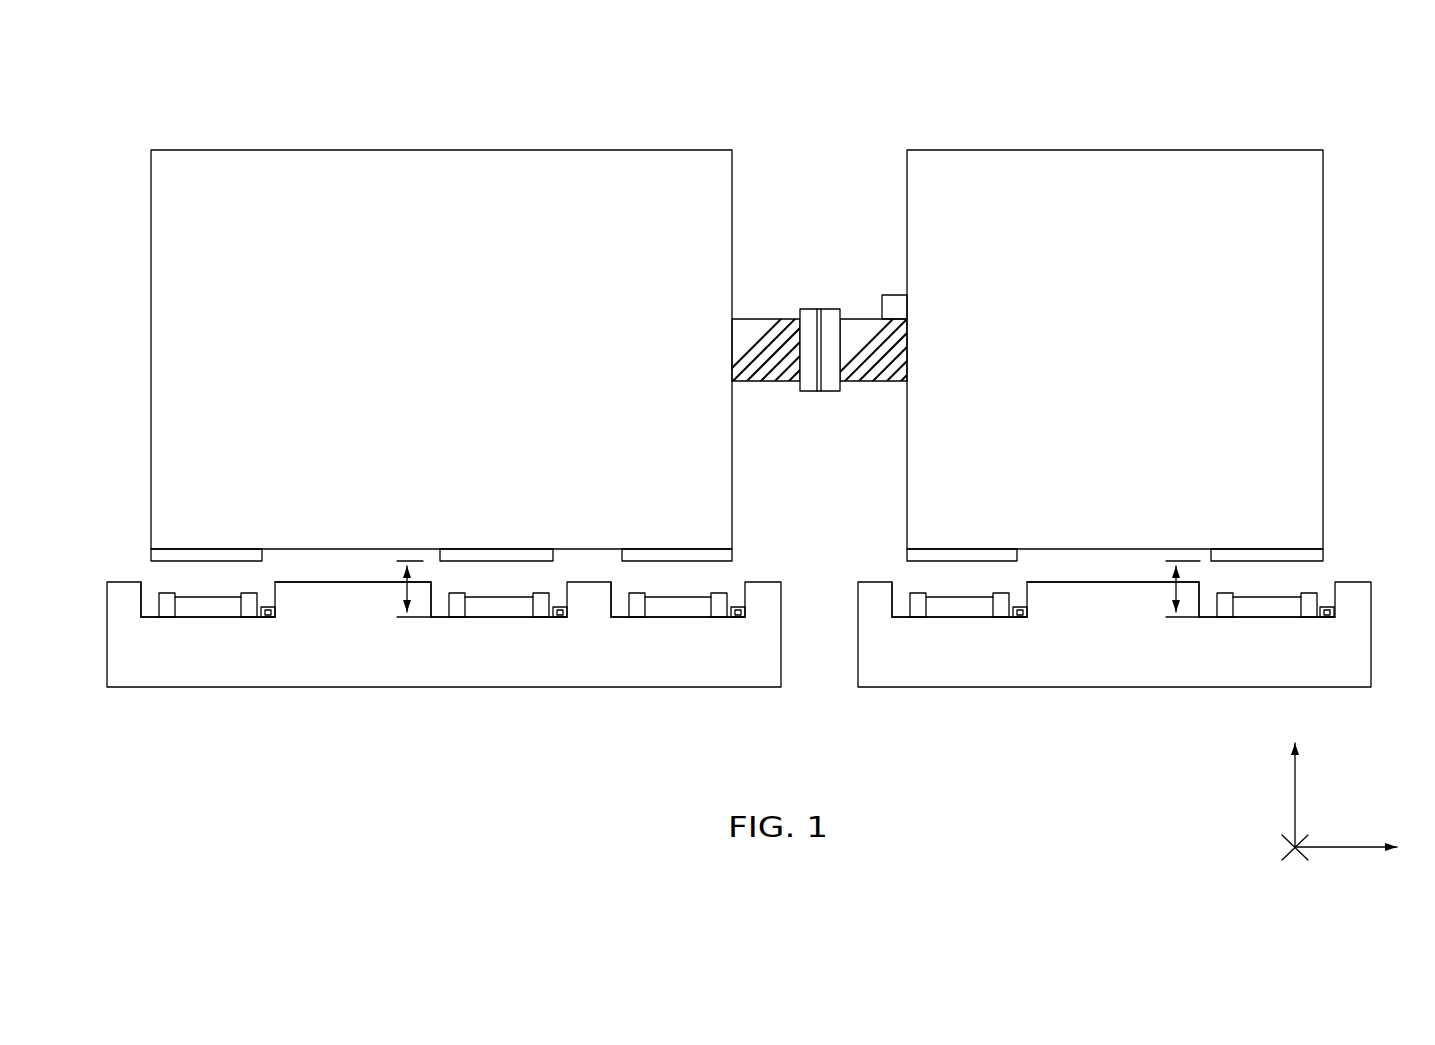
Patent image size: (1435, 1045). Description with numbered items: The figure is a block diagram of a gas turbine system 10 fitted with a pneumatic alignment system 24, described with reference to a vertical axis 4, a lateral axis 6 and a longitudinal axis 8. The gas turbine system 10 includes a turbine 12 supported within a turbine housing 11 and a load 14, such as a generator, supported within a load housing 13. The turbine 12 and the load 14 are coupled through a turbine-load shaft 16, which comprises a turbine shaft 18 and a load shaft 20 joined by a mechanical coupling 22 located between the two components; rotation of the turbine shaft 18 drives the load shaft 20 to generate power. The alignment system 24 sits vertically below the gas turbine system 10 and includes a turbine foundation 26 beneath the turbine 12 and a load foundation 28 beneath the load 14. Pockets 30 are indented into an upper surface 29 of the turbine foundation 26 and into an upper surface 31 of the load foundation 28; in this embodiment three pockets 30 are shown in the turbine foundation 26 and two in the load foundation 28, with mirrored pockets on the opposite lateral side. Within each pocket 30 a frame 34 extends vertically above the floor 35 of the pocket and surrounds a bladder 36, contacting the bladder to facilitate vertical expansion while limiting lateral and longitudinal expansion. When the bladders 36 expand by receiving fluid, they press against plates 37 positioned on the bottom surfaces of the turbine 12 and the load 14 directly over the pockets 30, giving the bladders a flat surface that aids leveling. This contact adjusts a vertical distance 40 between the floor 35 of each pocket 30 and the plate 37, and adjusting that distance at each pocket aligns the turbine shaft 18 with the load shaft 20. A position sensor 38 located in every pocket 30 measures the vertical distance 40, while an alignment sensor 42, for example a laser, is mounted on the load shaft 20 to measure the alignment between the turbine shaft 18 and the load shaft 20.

The vertical axis 4 is at (1294, 787).
The lateral axis 6 is at (1288, 850).
The longitudinal axis 8 is at (1340, 848).
The gas turbine system 10 is at (1295, 108).
The turbine housing 11 is at (586, 150).
The turbine 12 is at (355, 108).
The load housing 13 is at (990, 150).
The load 14 is at (1150, 125).
The turbine-load shaft 16 is at (855, 358).
The turbine shaft 18 is at (747, 319).
The load shaft 20 is at (884, 381).
The coupling 22 is at (810, 309).
The alignment system 24 is at (741, 645).
The turbine foundation 26 is at (122, 622).
The load foundation 28 is at (1358, 622).
The upper surface 29 is at (357, 578).
The pocket 30 is at (168, 578).
The upper surface 31 is at (1112, 578).
The frame 34 is at (249, 618).
The floor 35 is at (149, 627).
The bladder 36 is at (188, 618).
The plate 37 is at (220, 555).
The position sensor 38 is at (268, 618).
The vertical distance 40 is at (404, 598).
The alignment sensor 42 is at (893, 295).